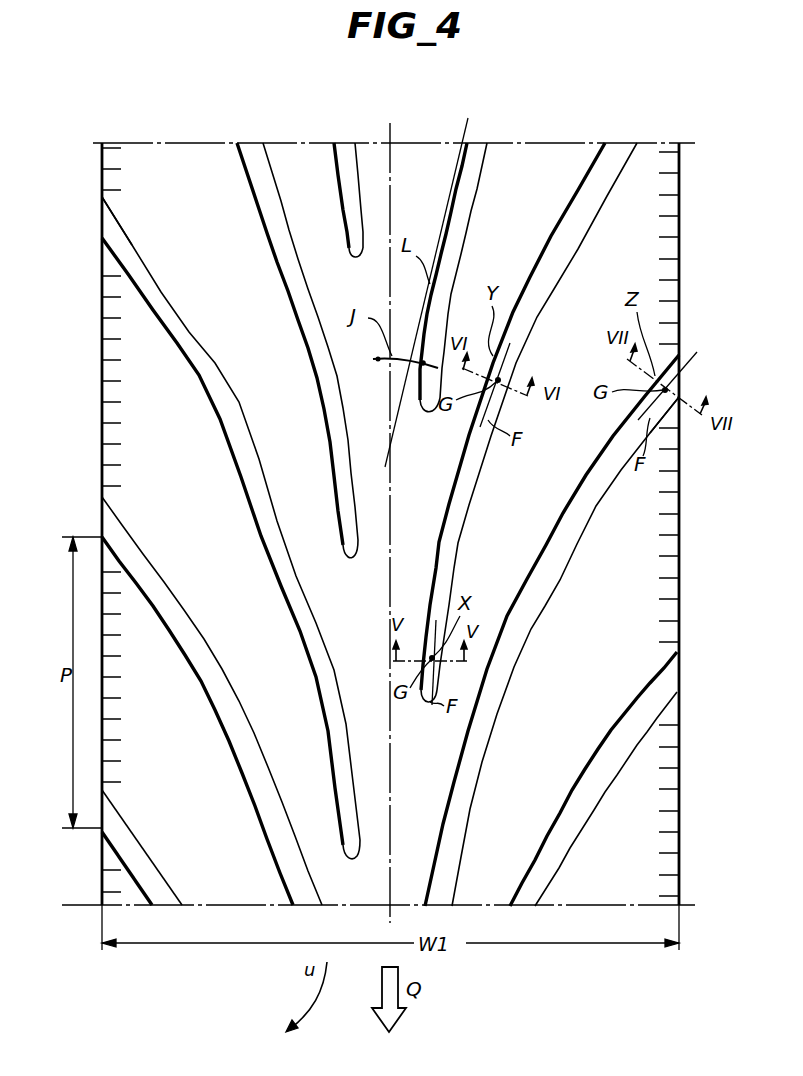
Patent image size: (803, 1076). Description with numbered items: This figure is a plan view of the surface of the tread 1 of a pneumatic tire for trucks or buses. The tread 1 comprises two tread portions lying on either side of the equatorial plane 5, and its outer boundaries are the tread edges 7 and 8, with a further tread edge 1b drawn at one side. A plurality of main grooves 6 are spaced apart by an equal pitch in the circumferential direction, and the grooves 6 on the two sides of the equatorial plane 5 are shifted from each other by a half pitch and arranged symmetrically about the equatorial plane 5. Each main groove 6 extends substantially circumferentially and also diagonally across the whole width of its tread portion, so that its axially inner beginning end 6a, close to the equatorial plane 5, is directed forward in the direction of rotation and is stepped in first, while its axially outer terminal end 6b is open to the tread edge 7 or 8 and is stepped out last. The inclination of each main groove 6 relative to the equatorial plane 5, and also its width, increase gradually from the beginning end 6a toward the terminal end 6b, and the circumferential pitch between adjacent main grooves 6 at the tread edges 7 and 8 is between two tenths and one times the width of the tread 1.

The tread 1 is at (544, 154).
The tread edge 1b is at (679, 292).
The equatorial plane 5 is at (394, 134).
The main grooves 6 is at (300, 283).
The beginning end 6a is at (353, 560).
The terminal end 6b is at (102, 222).
The tread edge 7 is at (102, 393).
The tread edge 8 is at (679, 464).